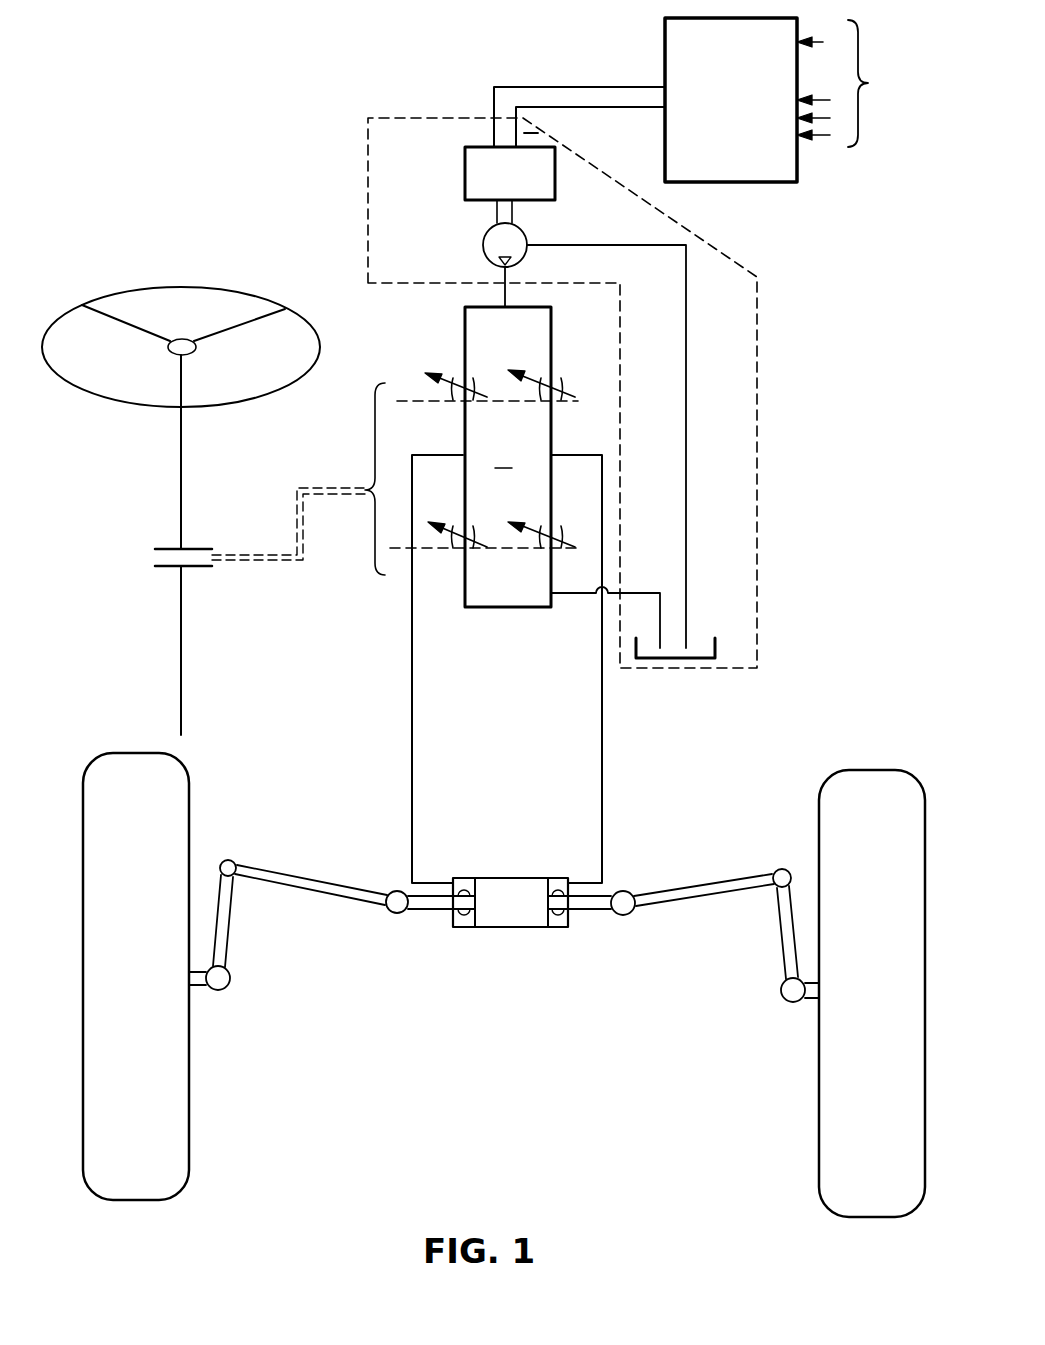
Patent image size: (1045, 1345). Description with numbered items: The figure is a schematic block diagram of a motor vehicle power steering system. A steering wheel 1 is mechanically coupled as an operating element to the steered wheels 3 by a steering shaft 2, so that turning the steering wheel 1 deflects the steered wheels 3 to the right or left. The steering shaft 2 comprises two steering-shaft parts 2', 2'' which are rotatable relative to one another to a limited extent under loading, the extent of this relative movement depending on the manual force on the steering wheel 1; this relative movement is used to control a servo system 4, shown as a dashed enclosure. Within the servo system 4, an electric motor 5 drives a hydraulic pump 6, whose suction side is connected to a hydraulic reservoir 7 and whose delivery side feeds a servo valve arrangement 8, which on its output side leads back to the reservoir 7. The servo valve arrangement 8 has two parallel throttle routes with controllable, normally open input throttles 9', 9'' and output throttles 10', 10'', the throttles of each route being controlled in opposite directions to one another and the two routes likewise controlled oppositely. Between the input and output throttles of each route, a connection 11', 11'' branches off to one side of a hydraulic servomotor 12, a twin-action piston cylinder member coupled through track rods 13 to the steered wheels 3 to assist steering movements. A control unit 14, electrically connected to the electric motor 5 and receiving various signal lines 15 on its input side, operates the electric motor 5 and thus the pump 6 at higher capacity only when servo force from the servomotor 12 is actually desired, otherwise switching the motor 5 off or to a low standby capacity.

The steering wheel 1 is at (180, 287).
The steering shaft 2 is at (140, 545).
The steering-shaft part 2' is at (204, 452).
The steering-shaft part 2'' is at (215, 650).
The steered wheels 3 is at (190, 1093).
The servo system 4 is at (402, 340).
The electric motor 5 is at (465, 172).
The hydraulic pump 6 is at (483, 245).
The hydraulic reservoir 7 is at (698, 645).
The servo valve arrangement 8 is at (525, 477).
The input throttle 9' is at (450, 353).
The input throttle 9'' is at (552, 353).
The output throttle 10' is at (453, 587).
The output throttle 10'' is at (554, 587).
The connection 11' is at (411, 669).
The connection 11'' is at (612, 669).
The hydraulic servomotor 12 is at (512, 878).
The track rods 13 is at (310, 878).
The control unit 14 is at (742, 132).
The signal lines 15 is at (866, 83).